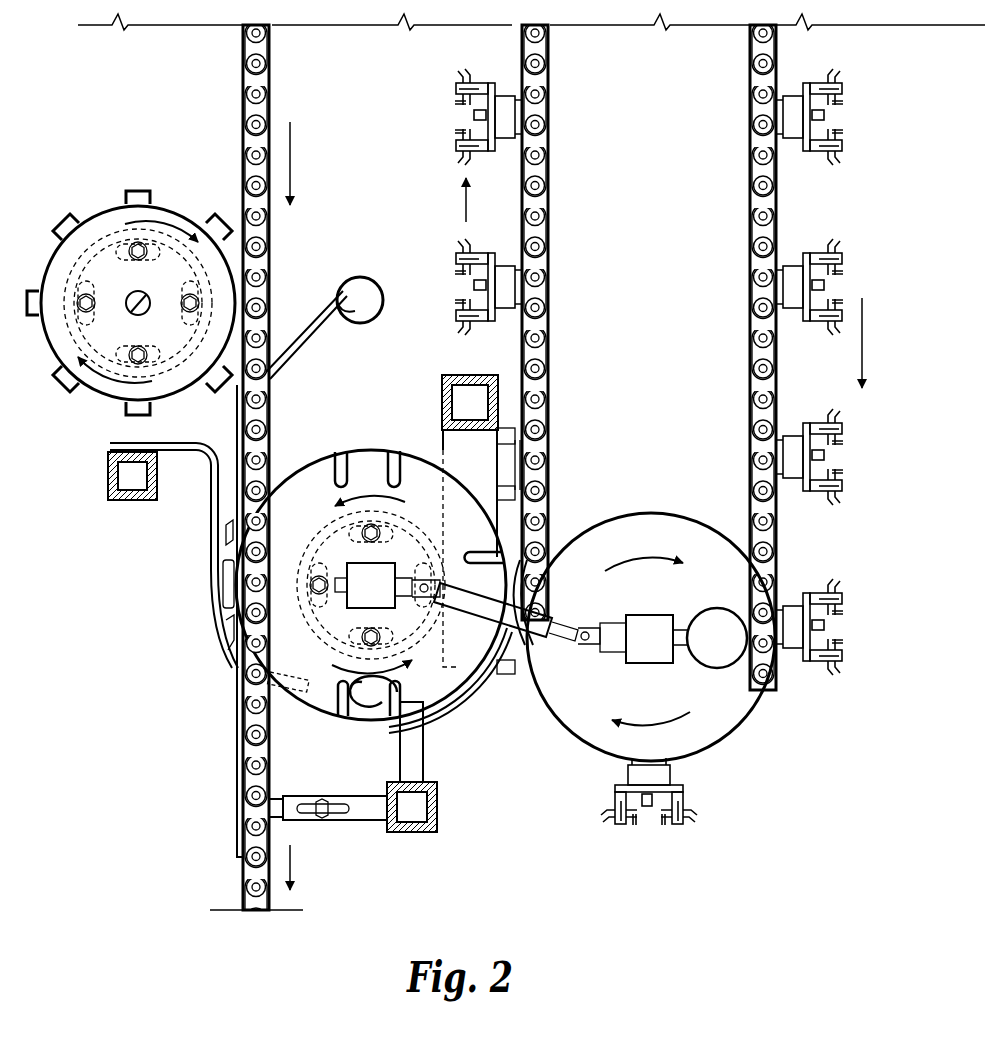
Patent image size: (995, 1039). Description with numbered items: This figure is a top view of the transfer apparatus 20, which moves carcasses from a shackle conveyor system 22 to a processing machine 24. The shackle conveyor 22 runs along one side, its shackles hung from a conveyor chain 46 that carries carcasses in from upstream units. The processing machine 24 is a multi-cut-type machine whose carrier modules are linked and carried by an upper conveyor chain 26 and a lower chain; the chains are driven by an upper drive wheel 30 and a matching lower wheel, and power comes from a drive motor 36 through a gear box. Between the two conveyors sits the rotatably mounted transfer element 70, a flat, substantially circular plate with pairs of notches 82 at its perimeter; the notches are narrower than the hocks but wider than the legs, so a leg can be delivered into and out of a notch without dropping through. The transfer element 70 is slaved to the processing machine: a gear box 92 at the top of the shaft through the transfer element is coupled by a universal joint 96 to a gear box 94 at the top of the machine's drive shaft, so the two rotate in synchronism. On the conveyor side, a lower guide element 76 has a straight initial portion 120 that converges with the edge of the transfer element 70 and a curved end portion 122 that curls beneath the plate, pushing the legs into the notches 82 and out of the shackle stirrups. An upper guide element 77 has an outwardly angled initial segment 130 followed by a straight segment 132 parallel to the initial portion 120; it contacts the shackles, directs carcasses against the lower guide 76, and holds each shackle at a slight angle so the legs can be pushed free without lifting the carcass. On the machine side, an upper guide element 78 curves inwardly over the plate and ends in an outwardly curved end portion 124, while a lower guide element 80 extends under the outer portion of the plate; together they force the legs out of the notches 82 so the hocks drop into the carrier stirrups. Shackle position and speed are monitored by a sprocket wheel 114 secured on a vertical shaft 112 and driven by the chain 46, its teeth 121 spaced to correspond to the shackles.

The transfer apparatus 20 is at (438, 724).
The shackle conveyor system 22 is at (240, 82).
The processing machine 24 is at (728, 752).
The upper conveyor chain 26 is at (750, 210).
The upper drive wheel 30 is at (675, 598).
The drive motor 36 is at (722, 647).
The conveyor chain 46 is at (272, 104).
The rotatably mounted transfer element 70 is at (371, 581).
The lower guide element 76 is at (154, 556).
The upper guide element 77 is at (318, 300).
The upper guide element 78 is at (452, 698).
The lower guide element 80 is at (445, 425).
The notches 82 is at (337, 446).
The gear box 92 is at (363, 596).
The gear box 94 is at (640, 657).
The universal joint 96 is at (530, 622).
The vertical shaft 112 is at (148, 296).
The sprocket wheel 114 is at (131, 269).
The initial portion 120 is at (213, 522).
The teeth 121 is at (33, 292).
The curved end portion 122 is at (222, 646).
The outwardly curved end portion 124 is at (510, 548).
The outwardly angled initial segment 130 is at (327, 298).
The straight segment 132 is at (237, 755).